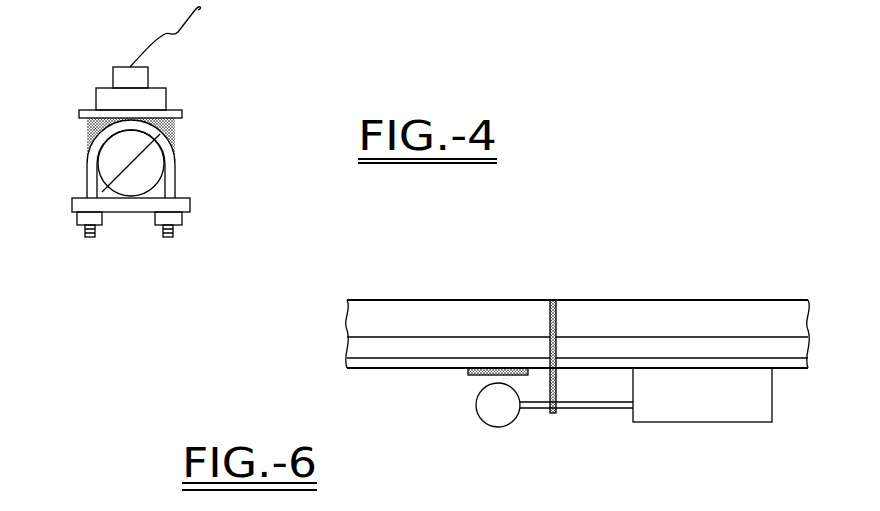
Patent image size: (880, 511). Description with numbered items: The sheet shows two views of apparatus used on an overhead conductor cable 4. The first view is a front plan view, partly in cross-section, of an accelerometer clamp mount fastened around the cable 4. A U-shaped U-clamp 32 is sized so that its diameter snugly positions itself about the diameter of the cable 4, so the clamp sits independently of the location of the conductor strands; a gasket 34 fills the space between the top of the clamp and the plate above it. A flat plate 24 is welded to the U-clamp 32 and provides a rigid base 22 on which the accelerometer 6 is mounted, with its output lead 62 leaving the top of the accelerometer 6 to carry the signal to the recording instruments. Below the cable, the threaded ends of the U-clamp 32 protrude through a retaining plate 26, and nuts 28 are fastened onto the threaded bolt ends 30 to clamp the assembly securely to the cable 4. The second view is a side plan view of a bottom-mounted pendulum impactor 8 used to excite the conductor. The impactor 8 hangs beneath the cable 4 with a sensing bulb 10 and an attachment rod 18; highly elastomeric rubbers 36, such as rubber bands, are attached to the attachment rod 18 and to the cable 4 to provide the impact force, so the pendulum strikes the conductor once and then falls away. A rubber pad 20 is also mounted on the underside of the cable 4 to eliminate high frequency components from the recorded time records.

In FIG. 4, the conductor cable 4 is at (103, 157).
In FIG. 6, the conductor cable 4 is at (660, 300).
In FIG. 4, the accelerometer 6 is at (112, 67).
In FIG. 6, the impactor 8 is at (700, 422).
In FIG. 6, the sensing bulb 10 is at (490, 424).
In FIG. 6, the attachment rod 18 is at (593, 409).
In FIG. 6, the rubber pad 20 is at (469, 375).
In FIG. 4, the rigid base 22 is at (96, 95).
In FIG. 4, the flat plate 24 is at (80, 112).
In FIG. 4, the retaining plate 26 is at (75, 202).
In FIG. 4, the nut 28 is at (77, 222).
In FIG. 4, the bolt end 30 is at (90, 237).
In FIG. 4, the U-clamp 32 is at (175, 168).
In FIG. 4, the gasket 34 is at (168, 133).
In FIG. 6, the elastomeric rubbers 36 is at (555, 300).
In FIG. 4, the output lead 62 is at (183, 22).